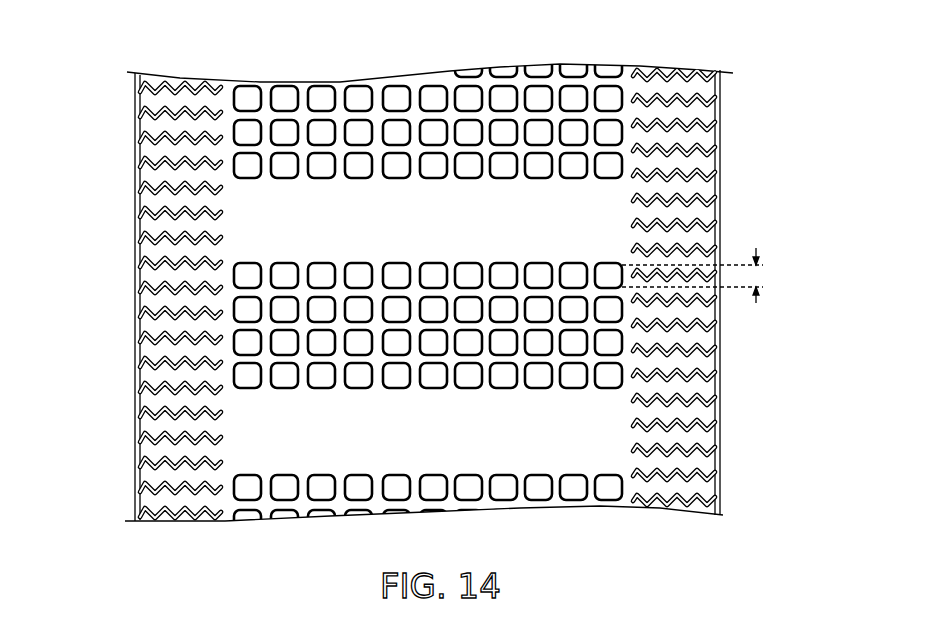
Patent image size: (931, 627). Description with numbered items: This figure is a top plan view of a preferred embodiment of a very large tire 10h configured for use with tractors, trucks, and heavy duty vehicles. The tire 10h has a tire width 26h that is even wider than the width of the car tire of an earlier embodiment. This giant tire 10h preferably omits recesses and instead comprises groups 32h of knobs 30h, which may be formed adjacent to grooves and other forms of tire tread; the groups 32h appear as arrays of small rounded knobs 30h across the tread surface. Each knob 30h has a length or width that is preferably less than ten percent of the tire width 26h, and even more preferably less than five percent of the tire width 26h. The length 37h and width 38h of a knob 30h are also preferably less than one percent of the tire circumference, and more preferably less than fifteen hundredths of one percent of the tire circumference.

The tire 10h is at (96, 142).
The tire width 26h is at (717, 38).
The width of the knob 38h is at (372, 255).
The length of the knob 37h is at (770, 274).
The group of knobs 32h is at (471, 394).
The knob 30h is at (572, 388).